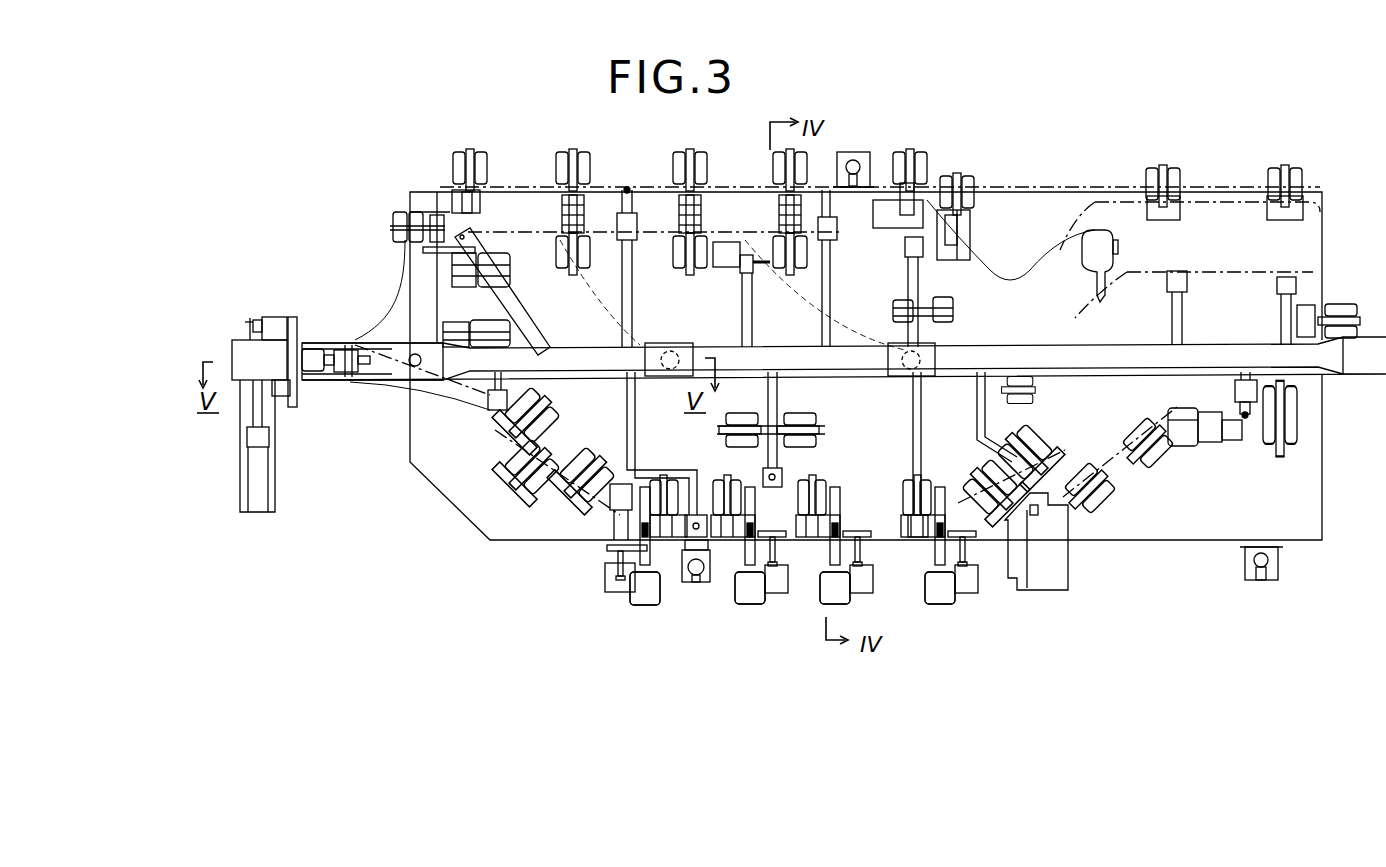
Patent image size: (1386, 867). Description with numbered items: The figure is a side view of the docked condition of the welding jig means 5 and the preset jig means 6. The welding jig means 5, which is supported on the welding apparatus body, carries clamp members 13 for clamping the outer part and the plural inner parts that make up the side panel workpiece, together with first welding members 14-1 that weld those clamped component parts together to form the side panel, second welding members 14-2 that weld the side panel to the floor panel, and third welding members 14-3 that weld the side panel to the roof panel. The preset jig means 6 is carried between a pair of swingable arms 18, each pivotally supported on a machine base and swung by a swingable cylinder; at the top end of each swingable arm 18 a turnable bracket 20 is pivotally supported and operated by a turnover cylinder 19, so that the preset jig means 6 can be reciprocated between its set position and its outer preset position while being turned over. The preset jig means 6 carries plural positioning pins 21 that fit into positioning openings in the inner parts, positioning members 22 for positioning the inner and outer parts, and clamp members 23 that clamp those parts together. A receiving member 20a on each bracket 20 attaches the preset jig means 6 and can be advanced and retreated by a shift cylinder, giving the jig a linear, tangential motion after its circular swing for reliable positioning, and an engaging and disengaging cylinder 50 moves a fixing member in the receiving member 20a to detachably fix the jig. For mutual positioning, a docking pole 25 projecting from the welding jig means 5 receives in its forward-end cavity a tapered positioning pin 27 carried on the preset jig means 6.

The welding jig means 5 is at (1046, 192).
The preset jig means 6 is at (608, 346).
The clamp members 13 is at (640, 575).
The first welding members 14-1 is at (404, 226).
The second welding members 14-2 is at (560, 170).
The third welding members 14-3 is at (735, 548).
The swingable arm 18 is at (272, 462).
The turnover cylinder 19 is at (254, 497).
The turnable bracket 20 is at (292, 318).
The receiving member 20a is at (345, 382).
The positioning pins 21 is at (465, 232).
The positioning members 22 is at (742, 268).
The clamp members 23 is at (627, 188).
The docking pole 25 is at (665, 350).
The tapered positioning pin 27 is at (668, 378).
The engaging and disengaging cylinder 50 is at (318, 350).